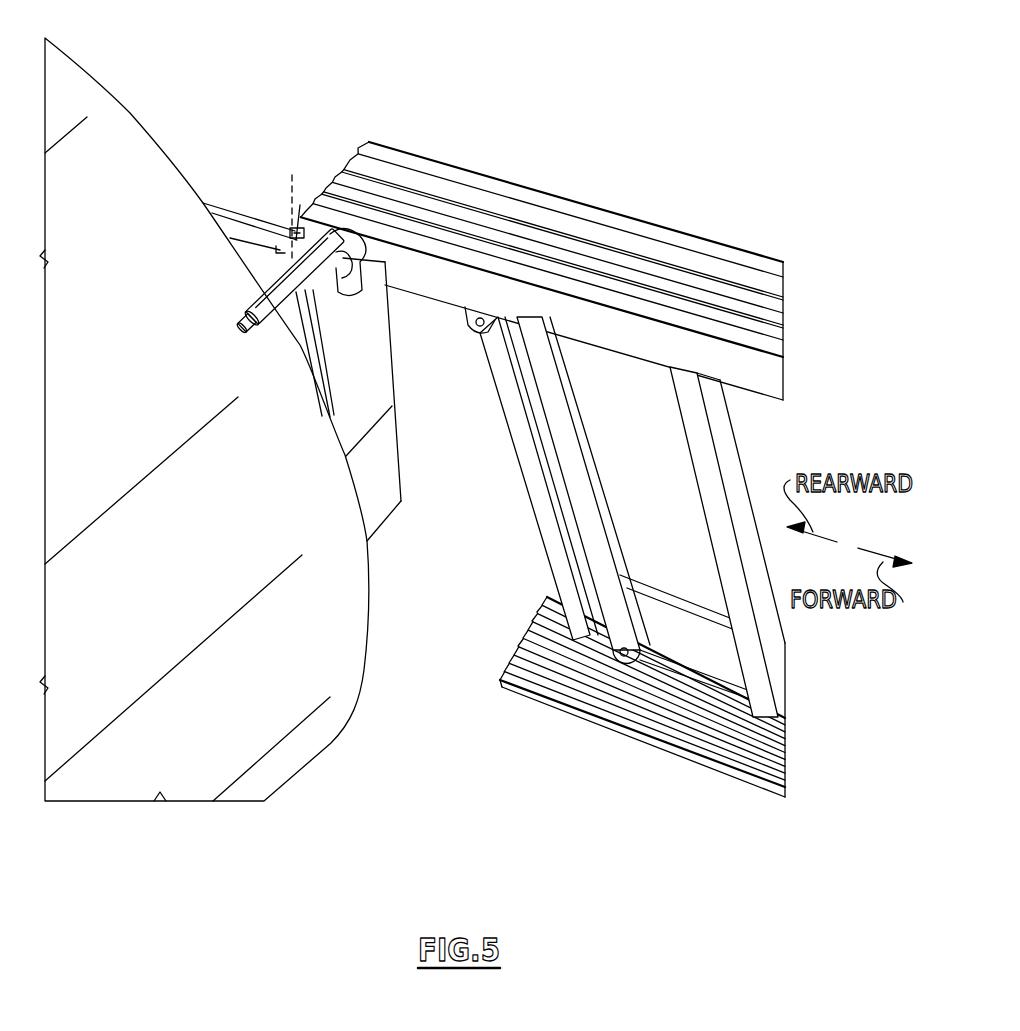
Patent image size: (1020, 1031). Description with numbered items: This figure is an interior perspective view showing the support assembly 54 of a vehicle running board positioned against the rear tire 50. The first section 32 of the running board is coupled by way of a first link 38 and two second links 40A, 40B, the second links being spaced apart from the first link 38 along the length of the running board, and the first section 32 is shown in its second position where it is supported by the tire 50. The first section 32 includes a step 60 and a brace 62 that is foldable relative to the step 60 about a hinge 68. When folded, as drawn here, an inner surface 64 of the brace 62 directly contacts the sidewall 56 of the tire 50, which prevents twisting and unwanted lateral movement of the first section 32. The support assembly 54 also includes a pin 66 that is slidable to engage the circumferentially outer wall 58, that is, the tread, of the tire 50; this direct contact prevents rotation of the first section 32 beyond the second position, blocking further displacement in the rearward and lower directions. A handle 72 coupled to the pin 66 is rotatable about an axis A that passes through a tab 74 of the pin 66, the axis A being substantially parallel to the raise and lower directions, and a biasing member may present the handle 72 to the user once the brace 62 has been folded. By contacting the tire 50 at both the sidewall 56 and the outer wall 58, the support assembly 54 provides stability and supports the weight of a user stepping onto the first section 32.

The first section 32 is at (542, 271).
The first link 38 is at (727, 444).
The second link 40A is at (577, 447).
The second link 40B is at (542, 503).
The rear tire 50 is at (100, 83).
The support assembly 54 is at (250, 147).
The sidewall 56 is at (160, 147).
The circumferentially outer wall 58 is at (102, 182).
The step 60 is at (567, 210).
The brace 62 is at (375, 488).
The inner surface 64 is at (308, 358).
The pin 66 is at (278, 283).
The hinge 68 is at (333, 297).
The handle 72 is at (222, 213).
The tab 74 is at (300, 237).
The axis A is at (292, 191).